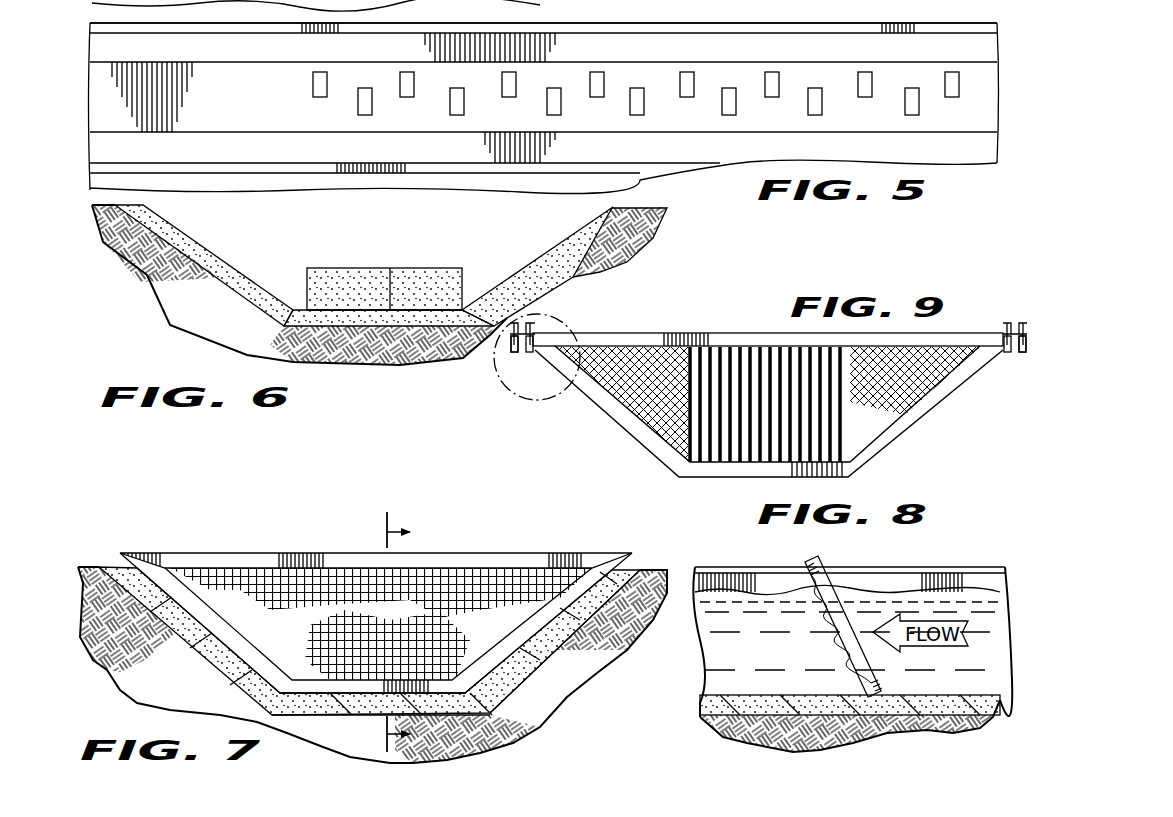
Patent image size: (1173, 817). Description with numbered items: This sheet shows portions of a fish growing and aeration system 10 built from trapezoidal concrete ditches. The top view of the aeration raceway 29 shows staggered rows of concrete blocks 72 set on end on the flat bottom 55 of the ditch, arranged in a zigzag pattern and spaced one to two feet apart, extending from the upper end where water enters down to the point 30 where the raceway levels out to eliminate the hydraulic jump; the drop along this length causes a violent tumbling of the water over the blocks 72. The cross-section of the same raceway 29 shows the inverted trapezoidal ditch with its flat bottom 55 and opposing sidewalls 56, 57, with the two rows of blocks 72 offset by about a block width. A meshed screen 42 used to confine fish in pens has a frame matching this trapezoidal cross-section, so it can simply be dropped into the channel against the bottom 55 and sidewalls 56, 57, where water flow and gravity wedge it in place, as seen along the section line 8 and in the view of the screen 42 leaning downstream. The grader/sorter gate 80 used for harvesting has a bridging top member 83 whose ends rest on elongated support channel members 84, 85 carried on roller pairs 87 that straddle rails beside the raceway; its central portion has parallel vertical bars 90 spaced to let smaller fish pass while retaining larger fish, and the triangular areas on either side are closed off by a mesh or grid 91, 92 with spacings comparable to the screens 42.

In FIG. 8, the grate clip detail (circle) 10 is at (512, 392).
In FIG. 5, the aeration raceway 29 is at (582, 124).
In FIG. 6, the aeration raceway 29 is at (389, 266).
In FIG. 5, the point 30 is at (262, 58).
In FIG. 7, the meshed screen 42 is at (492, 553).
In FIG. 9, the meshed screen 42 is at (808, 560).
In FIG. 6, the flat bottom 55 is at (292, 310).
In FIG. 7, the flat bottom 55 is at (428, 712).
In FIG. 9, the flat bottom 55 is at (803, 695).
In FIG. 6, the sidewall 56 is at (541, 263).
In FIG. 7, the sidewall 56 is at (546, 638).
In FIG. 6, the sidewall 57 is at (228, 262).
In FIG. 7, the sidewall 57 is at (228, 668).
In FIG. 5, the concrete block 72 is at (450, 97).
In FIG. 6, the concrete block 72 is at (355, 268).
In FIG. 8, the grader/sorter gate 80 is at (700, 324).
In FIG. 8, the bridging top member 83 is at (650, 333).
In FIG. 8, the elongated support channel member 84 is at (532, 322).
In FIG. 8, the elongated support channel member 85 is at (1018, 322).
In FIG. 8, the roller pair 87 is at (516, 354).
In FIG. 8, the vertical bar 90 is at (690, 438).
In FIG. 8, the mesh or grid 91 is at (625, 432).
In FIG. 8, the mesh or grid 92 is at (905, 395).
In FIG. 7, the section line 8- 8 is at (377, 632).